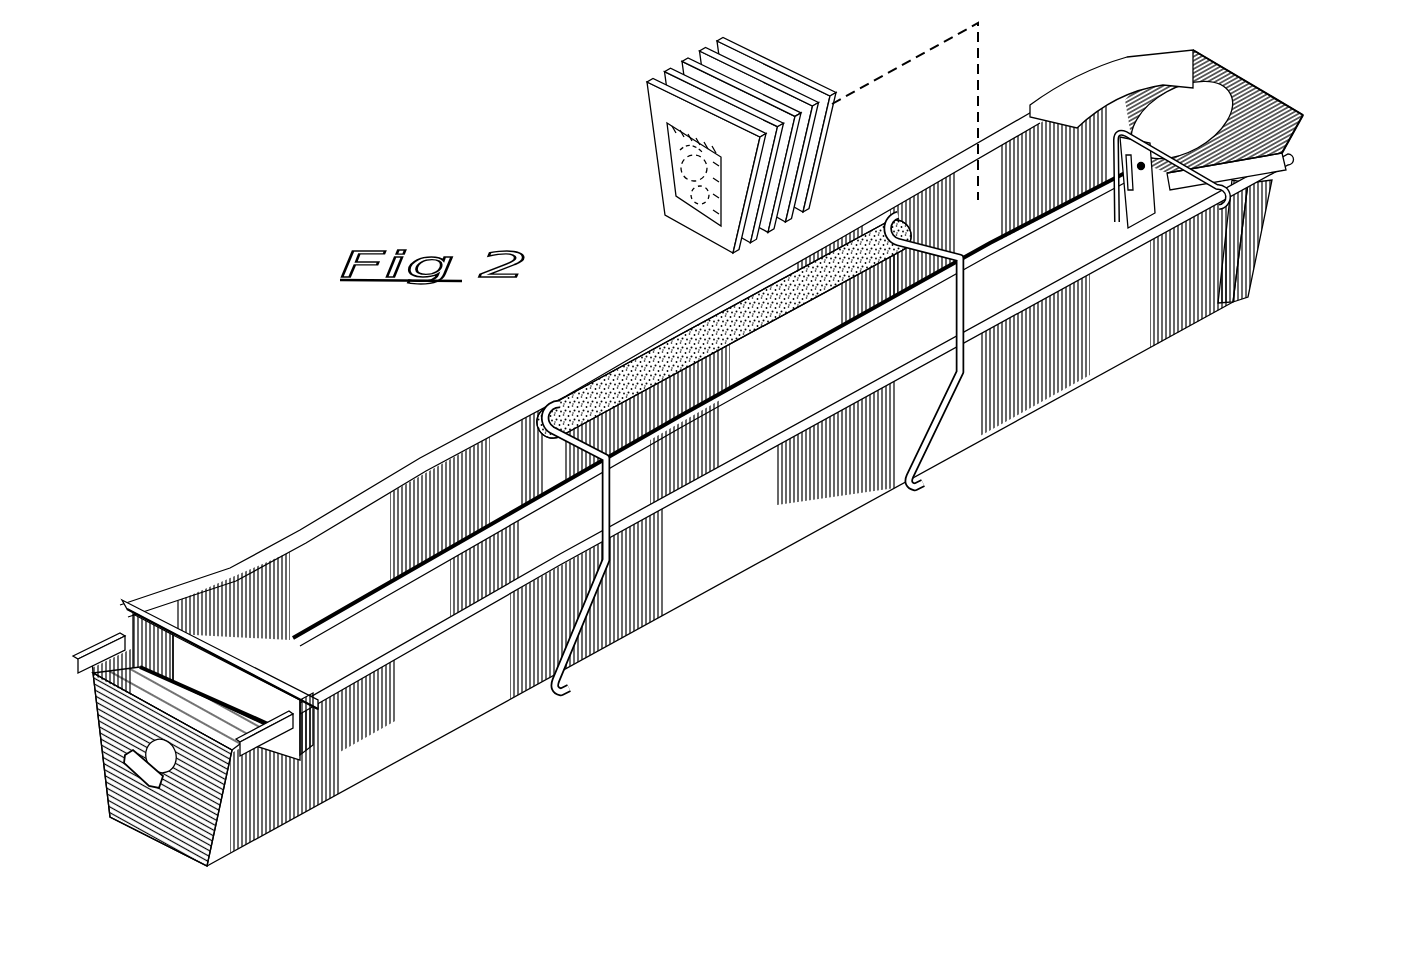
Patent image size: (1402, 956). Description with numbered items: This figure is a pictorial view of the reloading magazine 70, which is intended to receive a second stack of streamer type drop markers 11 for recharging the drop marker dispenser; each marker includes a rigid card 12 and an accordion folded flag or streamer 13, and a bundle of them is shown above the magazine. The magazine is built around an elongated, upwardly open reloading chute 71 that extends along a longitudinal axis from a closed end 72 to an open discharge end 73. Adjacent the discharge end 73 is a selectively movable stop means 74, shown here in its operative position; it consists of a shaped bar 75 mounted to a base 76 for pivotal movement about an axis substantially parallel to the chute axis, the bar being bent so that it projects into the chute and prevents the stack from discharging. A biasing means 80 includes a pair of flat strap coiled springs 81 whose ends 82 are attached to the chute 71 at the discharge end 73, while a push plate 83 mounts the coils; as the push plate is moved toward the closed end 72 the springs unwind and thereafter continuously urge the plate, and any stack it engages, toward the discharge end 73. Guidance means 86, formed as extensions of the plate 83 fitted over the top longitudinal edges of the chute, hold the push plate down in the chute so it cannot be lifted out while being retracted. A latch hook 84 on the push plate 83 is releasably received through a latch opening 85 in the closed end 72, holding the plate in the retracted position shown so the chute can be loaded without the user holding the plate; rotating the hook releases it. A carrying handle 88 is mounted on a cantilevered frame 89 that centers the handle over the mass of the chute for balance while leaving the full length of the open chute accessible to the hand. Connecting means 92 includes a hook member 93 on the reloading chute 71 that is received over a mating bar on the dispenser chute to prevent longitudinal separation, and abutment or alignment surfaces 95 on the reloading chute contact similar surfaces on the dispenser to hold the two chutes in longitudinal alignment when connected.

The drop markers 11 is at (669, 56).
The rigid card 12 is at (655, 116).
The accordion folded flag or streamer 13 is at (660, 183).
The reloading magazine 70 is at (601, 221).
The reloading chute 71 is at (721, 539).
The closed end 72 is at (193, 847).
The open discharge end 73 is at (1232, 68).
The selectively movable stop means 74 is at (1292, 157).
The shaped bar 75 is at (1171, 151).
The base 76 is at (1254, 272).
The biasing means 80 is at (306, 689).
The flat strap coiled springs 81 is at (400, 588).
The spring ends 82 is at (1108, 210).
The push plate 83 is at (292, 670).
The latch hook 84 is at (127, 756).
The latch opening 85 is at (162, 787).
The guidance means 86 is at (297, 727).
The carrying handle 88 is at (763, 317).
The cantilevered frame 89 is at (583, 447).
The connecting means 92 is at (1316, 97).
The hook member 93 is at (1302, 121).
The abutment or alignment surfaces 95 is at (1268, 242).